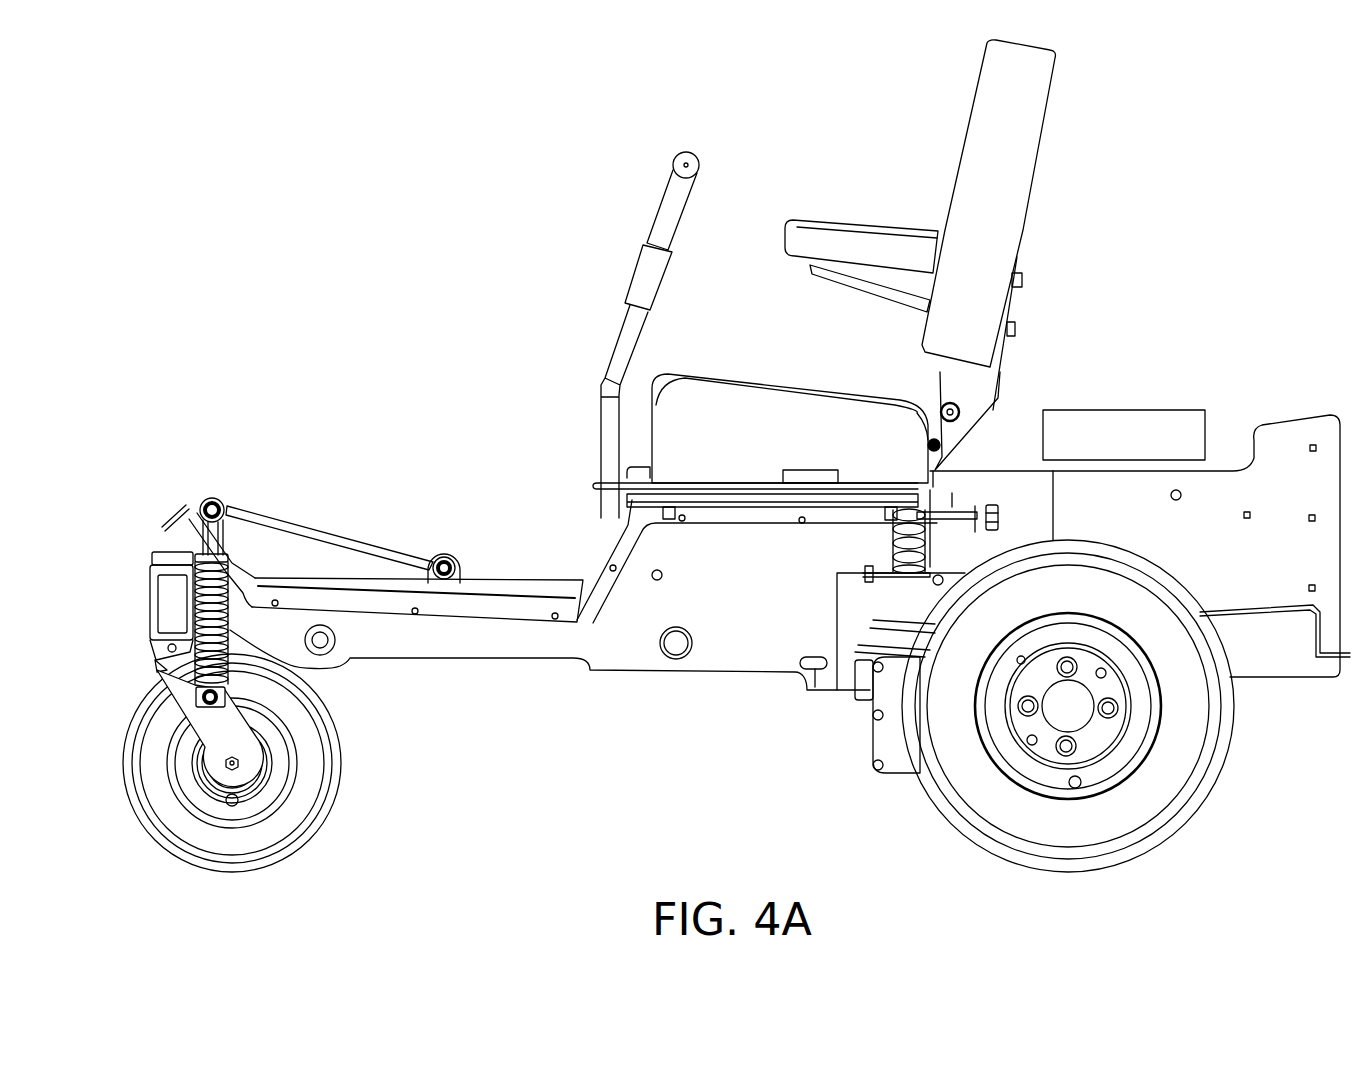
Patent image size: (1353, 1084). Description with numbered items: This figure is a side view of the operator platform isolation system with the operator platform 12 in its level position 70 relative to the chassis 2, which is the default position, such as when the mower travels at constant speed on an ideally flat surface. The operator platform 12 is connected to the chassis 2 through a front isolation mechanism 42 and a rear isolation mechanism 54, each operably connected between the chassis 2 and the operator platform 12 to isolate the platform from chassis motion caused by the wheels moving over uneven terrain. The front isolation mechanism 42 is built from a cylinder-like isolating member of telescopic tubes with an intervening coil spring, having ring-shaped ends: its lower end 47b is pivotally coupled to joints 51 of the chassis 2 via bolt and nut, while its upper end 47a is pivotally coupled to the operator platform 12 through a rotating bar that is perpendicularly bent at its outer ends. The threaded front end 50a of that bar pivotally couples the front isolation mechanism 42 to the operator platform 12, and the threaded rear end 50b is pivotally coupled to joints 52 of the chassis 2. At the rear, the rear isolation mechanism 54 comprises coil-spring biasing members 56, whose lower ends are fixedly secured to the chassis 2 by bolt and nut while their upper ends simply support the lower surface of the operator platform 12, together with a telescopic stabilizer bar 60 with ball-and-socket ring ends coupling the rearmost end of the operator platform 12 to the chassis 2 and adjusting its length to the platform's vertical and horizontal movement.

The level position 70 is at (695, 456).
The chassis 2 is at (190, 712).
The front isolation mechanism 42 is at (333, 544).
The front end 50a is at (226, 477).
The rear end 50b is at (445, 558).
The upper end 47a is at (223, 506).
The lower end 47b is at (226, 693).
The joints 52 is at (463, 572).
The joints 51 is at (176, 672).
The operator platform 12 is at (495, 612).
The rear isolation mechanism 54 is at (829, 308).
The biasing members 56 is at (921, 543).
The stabilizer bar 60 is at (987, 505).